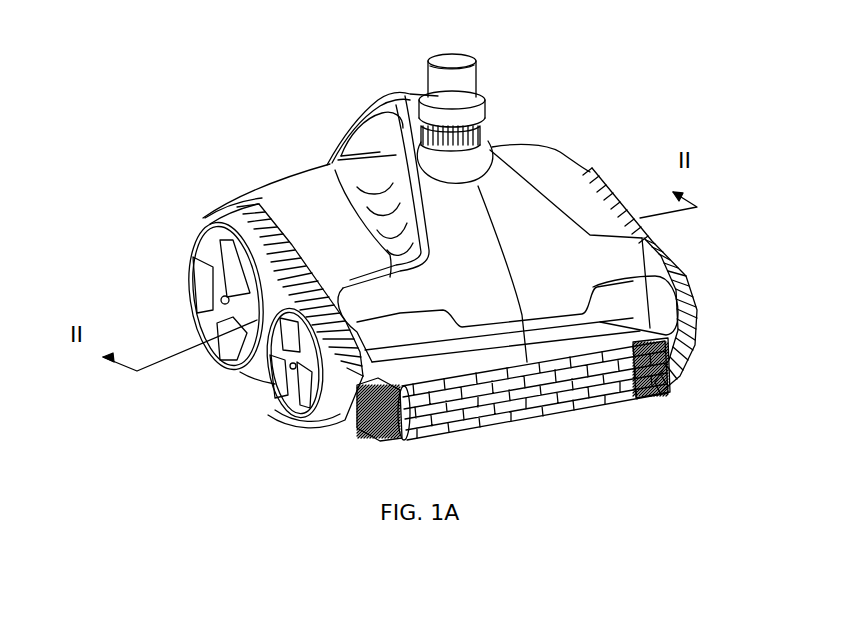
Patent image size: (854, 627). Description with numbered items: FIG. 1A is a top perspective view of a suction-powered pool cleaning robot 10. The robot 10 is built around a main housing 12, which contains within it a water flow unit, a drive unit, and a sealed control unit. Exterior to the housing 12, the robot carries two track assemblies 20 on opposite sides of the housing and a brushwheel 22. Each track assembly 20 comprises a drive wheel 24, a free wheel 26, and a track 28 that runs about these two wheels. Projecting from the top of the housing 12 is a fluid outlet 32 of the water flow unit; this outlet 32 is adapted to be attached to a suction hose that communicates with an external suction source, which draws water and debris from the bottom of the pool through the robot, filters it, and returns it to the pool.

The suction-powered pool cleaning robot 10 is at (590, 98).
The main housing 12 is at (518, 191).
The track assembly 20 is at (168, 233).
The brushwheel 22 is at (574, 405).
The drive wheel 24 is at (296, 368).
The free wheel 26 is at (219, 301).
The track 28 is at (678, 283).
The fluid outlet 32 is at (455, 60).